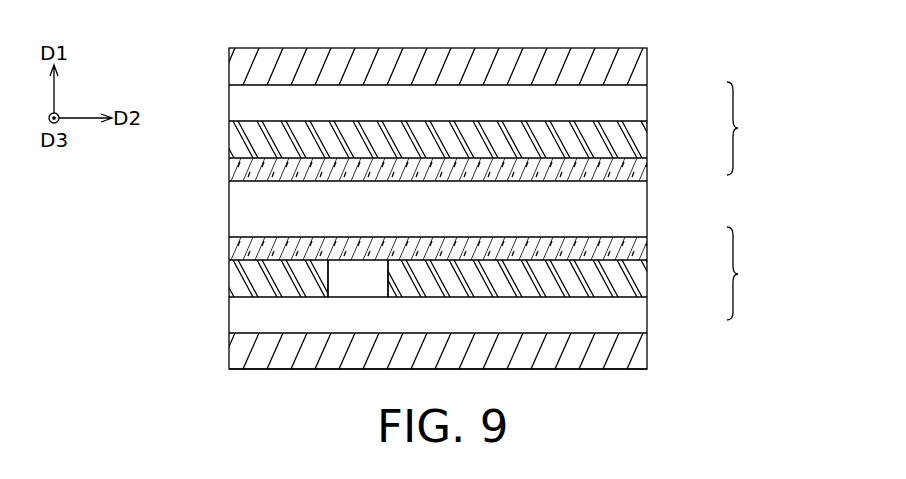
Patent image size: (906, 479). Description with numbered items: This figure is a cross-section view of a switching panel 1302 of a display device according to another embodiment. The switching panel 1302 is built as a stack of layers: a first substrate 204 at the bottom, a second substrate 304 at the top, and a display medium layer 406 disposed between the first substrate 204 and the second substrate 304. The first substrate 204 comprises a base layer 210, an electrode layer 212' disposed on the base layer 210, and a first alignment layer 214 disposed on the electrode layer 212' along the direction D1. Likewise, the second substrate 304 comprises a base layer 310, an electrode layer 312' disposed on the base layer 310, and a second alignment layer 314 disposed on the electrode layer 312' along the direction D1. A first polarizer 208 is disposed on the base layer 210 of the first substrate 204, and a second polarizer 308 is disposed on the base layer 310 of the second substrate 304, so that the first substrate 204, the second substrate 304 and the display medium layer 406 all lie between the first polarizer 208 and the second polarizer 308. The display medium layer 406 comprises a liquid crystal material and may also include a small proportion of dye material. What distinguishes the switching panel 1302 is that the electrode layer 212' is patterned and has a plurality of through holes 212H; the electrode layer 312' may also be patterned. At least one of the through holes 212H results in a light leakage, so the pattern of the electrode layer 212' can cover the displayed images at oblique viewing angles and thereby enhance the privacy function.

The switching panel 1302 is at (240, 23).
The second polarizer 308 is at (634, 69).
The base layer 310 is at (636, 101).
The electrode layer 312' is at (467, 139).
The second alignment layer 314 is at (637, 169).
The second substrate 304 is at (753, 128).
The display medium layer 406 is at (636, 208).
The first alignment layer 214 is at (637, 248).
The electrode layer 212' is at (467, 278).
The through holes 212H is at (343, 278).
The base layer 210 is at (636, 314).
The first polarizer 208 is at (636, 351).
The first substrate 204 is at (753, 273).